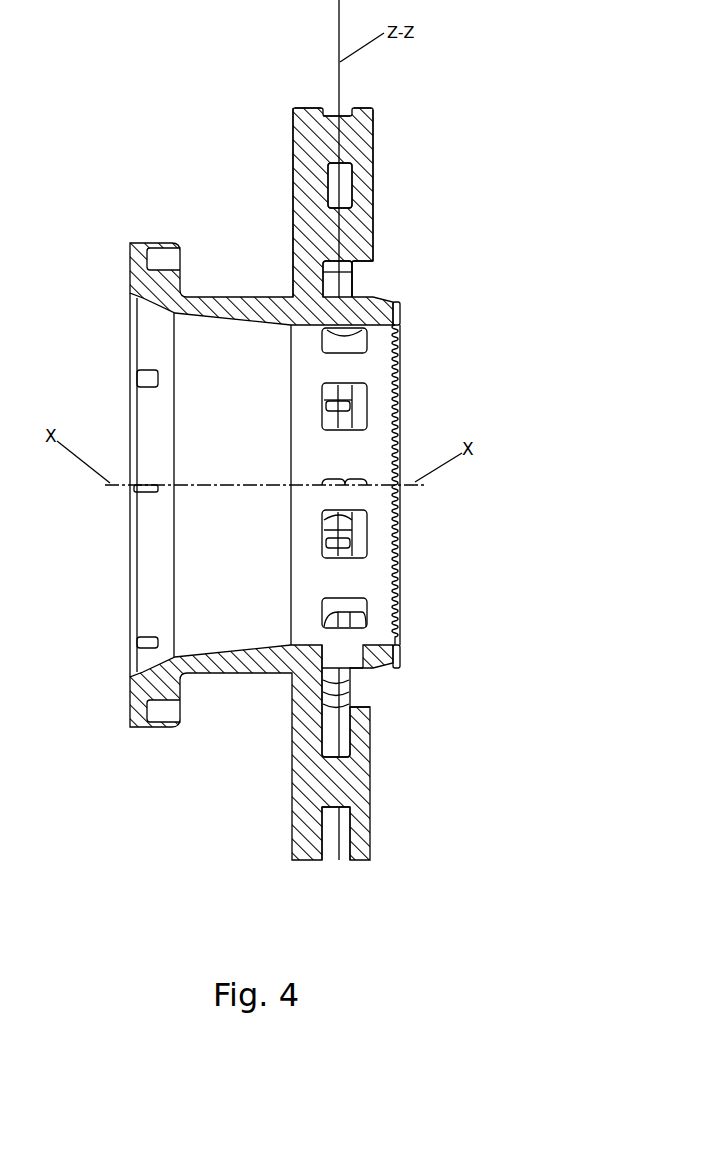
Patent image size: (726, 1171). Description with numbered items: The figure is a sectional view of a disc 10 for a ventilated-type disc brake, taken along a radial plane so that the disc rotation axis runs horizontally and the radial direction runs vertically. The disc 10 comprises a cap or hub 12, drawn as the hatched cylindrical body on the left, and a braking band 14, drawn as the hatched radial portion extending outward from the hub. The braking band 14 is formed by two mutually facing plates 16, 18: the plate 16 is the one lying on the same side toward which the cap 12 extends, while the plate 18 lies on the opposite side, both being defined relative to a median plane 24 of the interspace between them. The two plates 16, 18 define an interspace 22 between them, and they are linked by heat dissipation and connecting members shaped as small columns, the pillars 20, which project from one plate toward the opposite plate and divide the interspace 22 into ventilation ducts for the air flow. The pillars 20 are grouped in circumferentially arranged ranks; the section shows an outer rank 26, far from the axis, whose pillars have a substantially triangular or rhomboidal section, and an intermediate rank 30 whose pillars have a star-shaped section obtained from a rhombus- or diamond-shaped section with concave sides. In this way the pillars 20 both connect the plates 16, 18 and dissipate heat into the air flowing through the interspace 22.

The disc 10 is at (389, 128).
The cap or hub 12 is at (232, 308).
The braking band 14 is at (363, 192).
The plate 16 is at (303, 182).
The plate 18 is at (360, 237).
The pillars 20 is at (340, 730).
The interspace 22 is at (330, 104).
The median plane 24 is at (340, 281).
The outer rank 26 is at (334, 145).
The intermediate rank 30 is at (336, 196).